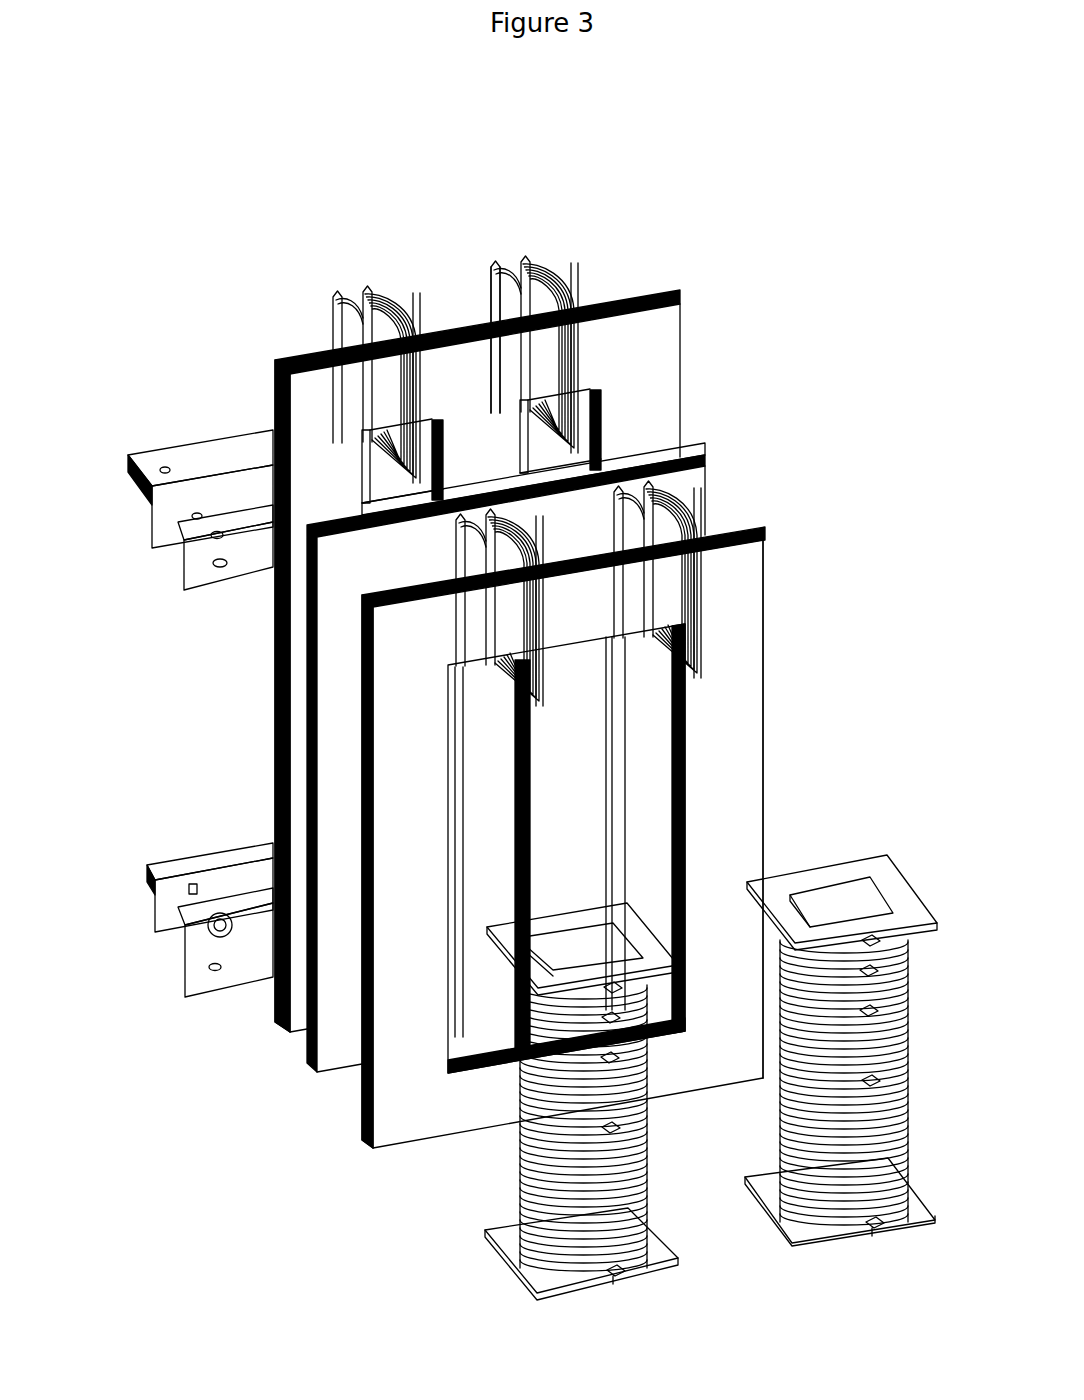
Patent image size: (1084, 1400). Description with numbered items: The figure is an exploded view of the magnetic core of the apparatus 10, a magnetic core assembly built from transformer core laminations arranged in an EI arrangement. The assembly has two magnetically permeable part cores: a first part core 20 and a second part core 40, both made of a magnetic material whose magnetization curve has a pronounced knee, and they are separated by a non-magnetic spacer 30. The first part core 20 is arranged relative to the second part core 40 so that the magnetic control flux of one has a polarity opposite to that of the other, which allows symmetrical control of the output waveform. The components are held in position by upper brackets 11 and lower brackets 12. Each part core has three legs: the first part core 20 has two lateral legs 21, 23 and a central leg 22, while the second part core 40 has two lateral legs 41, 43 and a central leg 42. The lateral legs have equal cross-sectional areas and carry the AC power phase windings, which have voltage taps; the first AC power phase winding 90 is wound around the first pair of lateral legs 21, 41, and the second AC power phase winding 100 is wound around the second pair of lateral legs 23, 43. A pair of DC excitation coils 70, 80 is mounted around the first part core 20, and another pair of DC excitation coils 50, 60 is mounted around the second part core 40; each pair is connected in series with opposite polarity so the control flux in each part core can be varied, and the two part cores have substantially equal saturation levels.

The apparatus 10 is at (118, 289).
The upper brackets 11 is at (178, 455).
The lower brackets 12 is at (192, 997).
The first part core 20 is at (580, 837).
The lateral leg 21 is at (423, 1053).
The central leg 22 is at (722, 992).
The lateral leg 23 is at (715, 740).
The non-magnetic spacer 30 is at (677, 485).
The second part core 40 is at (457, 616).
The lateral leg 41 is at (270, 690).
The central leg 42 is at (492, 380).
The lateral leg 43 is at (663, 427).
The DC excitation coil 50 is at (328, 320).
The DC excitation coil 60 is at (548, 345).
The DC excitation coil 70 is at (547, 697).
The DC excitation coil 80 is at (703, 590).
The first AC power phase winding 90 is at (582, 1285).
The second AC power phase winding 100 is at (840, 1245).